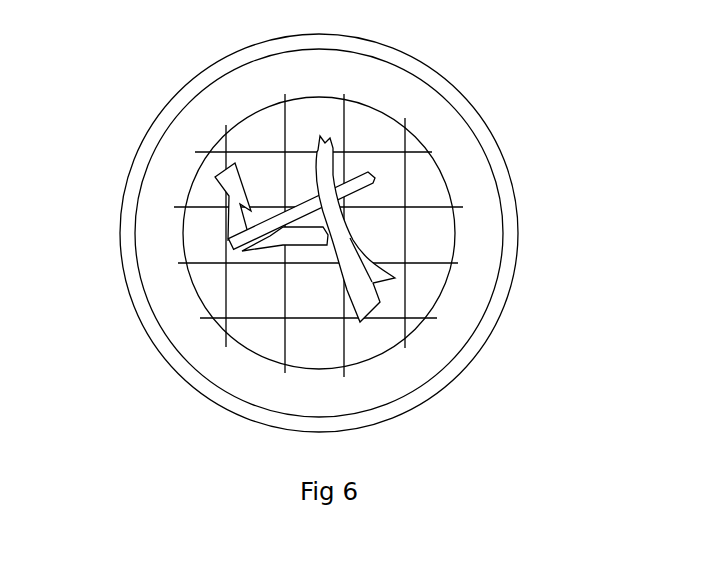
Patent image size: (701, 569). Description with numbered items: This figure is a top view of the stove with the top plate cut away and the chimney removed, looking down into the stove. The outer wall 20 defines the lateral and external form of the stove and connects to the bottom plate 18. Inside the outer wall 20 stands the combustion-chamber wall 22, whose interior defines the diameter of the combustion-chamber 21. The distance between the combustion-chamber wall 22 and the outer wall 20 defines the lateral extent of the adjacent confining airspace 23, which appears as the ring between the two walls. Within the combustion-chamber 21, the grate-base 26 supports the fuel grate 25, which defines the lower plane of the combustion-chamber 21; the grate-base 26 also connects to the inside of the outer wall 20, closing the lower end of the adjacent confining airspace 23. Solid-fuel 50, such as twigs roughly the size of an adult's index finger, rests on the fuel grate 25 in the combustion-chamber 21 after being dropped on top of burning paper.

The bottom plate 18 is at (253, 238).
The outer wall 20 is at (500, 315).
The combustion-chamber 21 is at (412, 363).
The combustion-chamber wall 22 is at (503, 257).
The adjacent confining airspace 23 is at (360, 233).
The fuel grate 25 is at (285, 133).
The grate-base 26 is at (168, 298).
The solid-fuel 50 is at (235, 190).